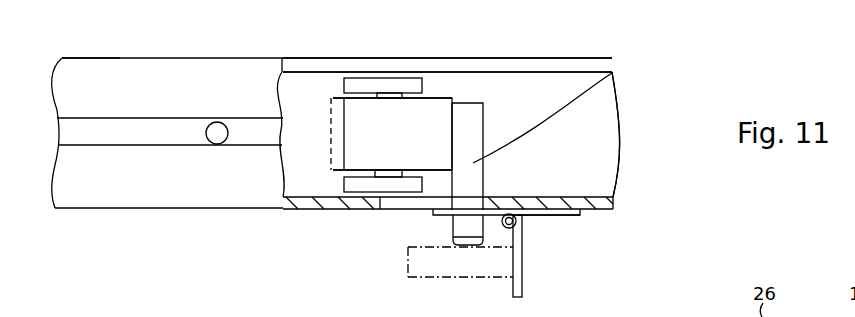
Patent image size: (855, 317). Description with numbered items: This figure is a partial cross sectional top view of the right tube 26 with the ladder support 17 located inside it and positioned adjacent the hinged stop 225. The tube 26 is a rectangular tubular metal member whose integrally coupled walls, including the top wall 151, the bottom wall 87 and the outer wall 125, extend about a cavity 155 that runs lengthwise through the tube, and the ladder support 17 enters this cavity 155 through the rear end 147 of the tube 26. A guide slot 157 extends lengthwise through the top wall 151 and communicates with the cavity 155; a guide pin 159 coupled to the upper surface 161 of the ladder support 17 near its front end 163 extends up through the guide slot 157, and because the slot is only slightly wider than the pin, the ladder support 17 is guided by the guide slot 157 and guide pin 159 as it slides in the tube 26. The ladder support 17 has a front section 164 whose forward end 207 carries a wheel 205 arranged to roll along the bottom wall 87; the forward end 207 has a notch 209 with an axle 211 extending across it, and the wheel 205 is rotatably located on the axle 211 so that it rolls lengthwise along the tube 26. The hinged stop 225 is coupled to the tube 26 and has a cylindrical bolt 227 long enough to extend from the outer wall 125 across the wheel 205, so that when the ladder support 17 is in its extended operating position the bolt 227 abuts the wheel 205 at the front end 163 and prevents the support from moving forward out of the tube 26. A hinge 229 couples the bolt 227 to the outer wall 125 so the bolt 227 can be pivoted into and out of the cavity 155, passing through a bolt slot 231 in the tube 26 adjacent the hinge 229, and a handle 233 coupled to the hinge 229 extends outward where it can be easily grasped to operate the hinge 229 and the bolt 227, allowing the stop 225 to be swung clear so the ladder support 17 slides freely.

The tube 26 is at (67, 55).
The guide pin 159 is at (209, 124).
The ladder support 17 is at (308, 85).
The forward end 207 is at (387, 83).
The wheel 205 is at (440, 128).
The notch 209 is at (408, 173).
The front end 163 is at (452, 142).
The cylindrical bolt 227 is at (612, 73).
The cavity 155 is at (603, 113).
The outer wall 125 is at (557, 200).
The bottom wall 87 is at (613, 210).
The guide slot 157 is at (75, 133).
The top wall 151 is at (123, 195).
The front section 164 is at (292, 131).
The upper surface 161 is at (322, 163).
The axle 211 is at (385, 173).
The bolt slot 231 is at (410, 212).
The handle 233 is at (473, 240).
The rear end 147 is at (567, 316).
The hinge 229 is at (517, 217).
The hinged stop 225 is at (563, 217).